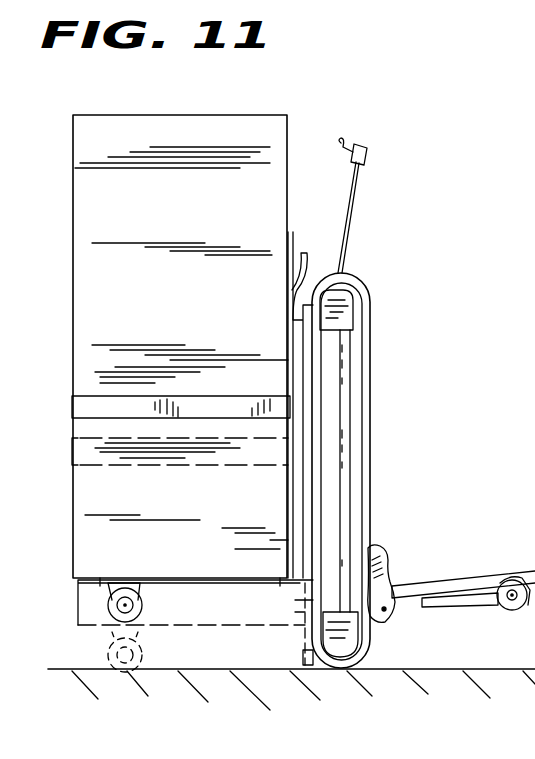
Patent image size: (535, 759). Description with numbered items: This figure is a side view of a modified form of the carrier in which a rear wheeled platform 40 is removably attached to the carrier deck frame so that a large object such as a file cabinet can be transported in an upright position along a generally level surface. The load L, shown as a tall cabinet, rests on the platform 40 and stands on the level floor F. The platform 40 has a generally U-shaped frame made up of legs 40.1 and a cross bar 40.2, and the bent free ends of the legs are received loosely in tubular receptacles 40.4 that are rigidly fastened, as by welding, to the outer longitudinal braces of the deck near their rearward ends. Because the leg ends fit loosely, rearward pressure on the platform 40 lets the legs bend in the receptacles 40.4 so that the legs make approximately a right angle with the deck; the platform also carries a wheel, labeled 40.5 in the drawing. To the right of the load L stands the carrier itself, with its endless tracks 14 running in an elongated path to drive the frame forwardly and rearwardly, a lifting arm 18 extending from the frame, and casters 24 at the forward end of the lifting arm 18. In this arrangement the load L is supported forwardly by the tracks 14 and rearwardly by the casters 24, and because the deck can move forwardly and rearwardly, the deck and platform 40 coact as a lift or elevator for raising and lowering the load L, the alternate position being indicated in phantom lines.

The endless tracks 14 is at (372, 652).
The lifting arm 18 is at (468, 580).
The casters 24 is at (534, 612).
The wheeled platform 40 is at (186, 600).
The legs 40.1 is at (270, 586).
The cross bar 40.2 is at (100, 585).
The tubular receptacles 40.4 is at (305, 598).
The caster wheel 40.5 is at (110, 612).
The load L is at (180, 306).
The floor F is at (226, 672).